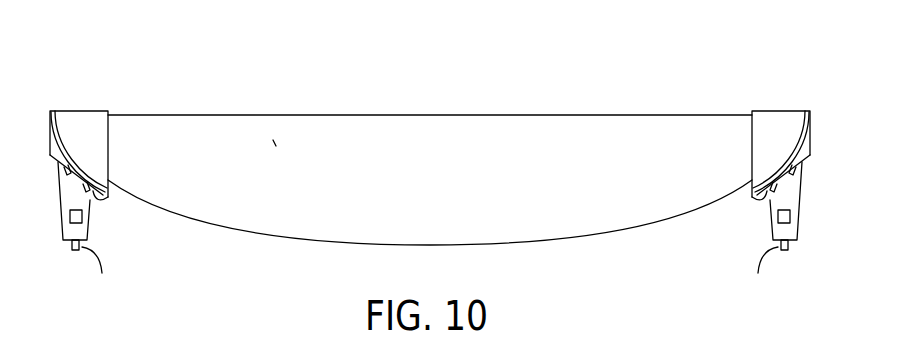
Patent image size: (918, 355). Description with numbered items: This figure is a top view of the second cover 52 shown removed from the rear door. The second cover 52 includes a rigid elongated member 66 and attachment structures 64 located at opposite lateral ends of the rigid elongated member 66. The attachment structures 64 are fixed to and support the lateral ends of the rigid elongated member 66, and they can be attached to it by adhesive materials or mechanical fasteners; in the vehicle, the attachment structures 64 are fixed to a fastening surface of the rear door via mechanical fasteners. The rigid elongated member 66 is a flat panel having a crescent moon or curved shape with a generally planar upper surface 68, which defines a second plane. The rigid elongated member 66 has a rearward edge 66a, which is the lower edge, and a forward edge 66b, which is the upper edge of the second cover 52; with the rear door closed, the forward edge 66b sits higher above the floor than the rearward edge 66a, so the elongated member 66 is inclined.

The second cover 52 is at (178, 78).
The attachment structures 64 is at (50, 145).
The rigid elongated member 66 is at (430, 179).
The rearward edge 66a is at (312, 242).
The forward edge 66b is at (358, 114).
The planar upper surface 68 is at (275, 145).